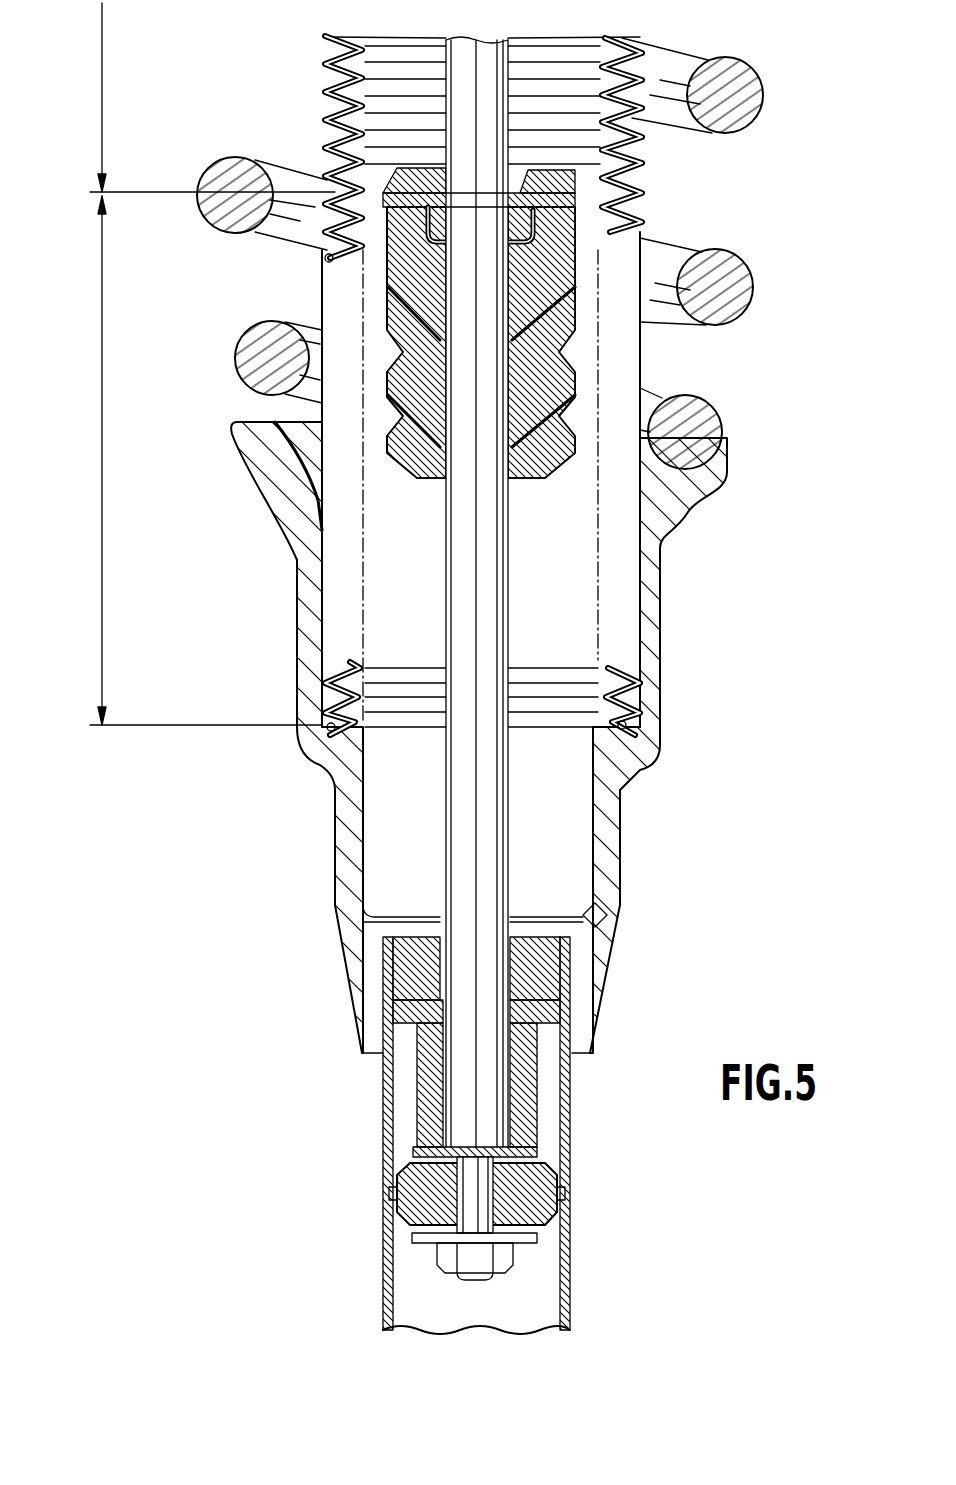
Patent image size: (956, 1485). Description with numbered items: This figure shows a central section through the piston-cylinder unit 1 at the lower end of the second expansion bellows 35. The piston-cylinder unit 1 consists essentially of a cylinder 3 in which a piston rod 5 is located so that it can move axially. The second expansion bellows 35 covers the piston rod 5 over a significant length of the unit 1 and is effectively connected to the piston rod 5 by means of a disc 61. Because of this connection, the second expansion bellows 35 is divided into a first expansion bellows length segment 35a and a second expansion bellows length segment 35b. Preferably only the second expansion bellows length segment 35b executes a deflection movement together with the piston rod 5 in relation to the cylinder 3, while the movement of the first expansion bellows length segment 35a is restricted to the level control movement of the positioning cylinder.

The piston-cylinder unit 1 is at (260, 851).
The cylinder 3 is at (382, 1192).
The piston rod 5 is at (470, 877).
The second expansion bellows 35 is at (312, 280).
The first expansion bellows length segment 35a is at (108, 75).
The second expansion bellows length segment 35b is at (105, 520).
The disc 61 is at (397, 187).